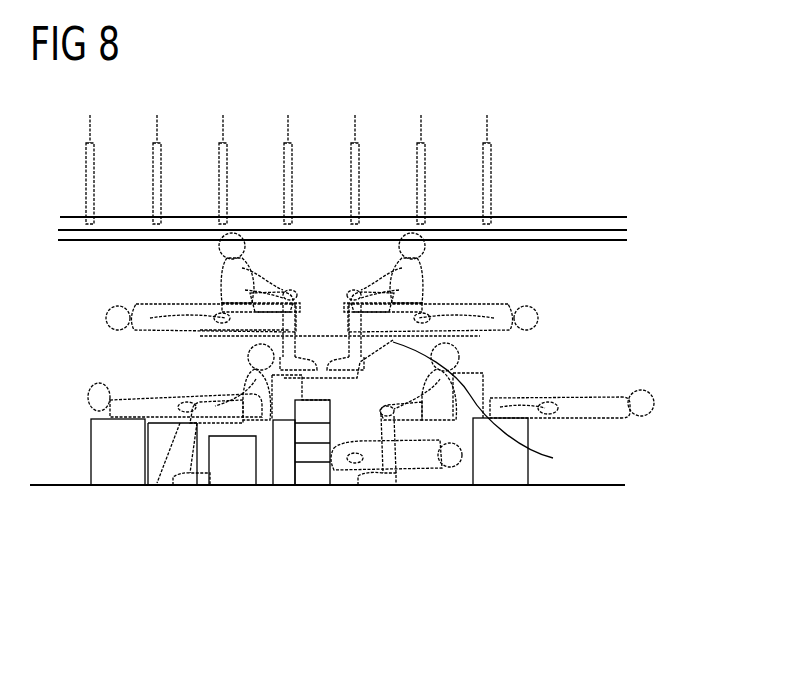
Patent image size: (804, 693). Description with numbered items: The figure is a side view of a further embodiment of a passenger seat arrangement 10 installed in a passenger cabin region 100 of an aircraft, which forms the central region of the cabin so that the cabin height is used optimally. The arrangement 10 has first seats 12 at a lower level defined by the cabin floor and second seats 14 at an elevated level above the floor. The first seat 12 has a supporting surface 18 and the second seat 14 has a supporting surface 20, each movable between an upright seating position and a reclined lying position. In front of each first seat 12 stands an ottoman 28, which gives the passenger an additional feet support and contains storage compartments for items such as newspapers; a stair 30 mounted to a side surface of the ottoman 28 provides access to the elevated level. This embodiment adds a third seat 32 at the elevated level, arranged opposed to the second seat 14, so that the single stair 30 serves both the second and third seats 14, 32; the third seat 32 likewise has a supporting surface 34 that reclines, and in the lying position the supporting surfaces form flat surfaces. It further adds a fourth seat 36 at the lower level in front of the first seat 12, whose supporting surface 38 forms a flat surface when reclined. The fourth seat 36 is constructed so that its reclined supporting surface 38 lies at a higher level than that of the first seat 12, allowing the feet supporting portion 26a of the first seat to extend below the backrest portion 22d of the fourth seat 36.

The passenger cabin region 100 is at (622, 152).
The passenger seat arrangement 10 is at (566, 368).
The first seat 12 is at (455, 465).
The second seat 14 is at (462, 275).
The supporting surface 18 is at (403, 473).
The supporting surface 20 is at (488, 408).
The backrest portion 22d is at (251, 440).
The feet supporting portion 26a is at (265, 420).
The ottoman 28 is at (315, 453).
The stair 30 is at (325, 487).
The third seat 32 is at (186, 274).
The supporting surface 34 is at (218, 338).
The fourth seat 36 is at (223, 468).
The supporting surface 38 is at (155, 487).